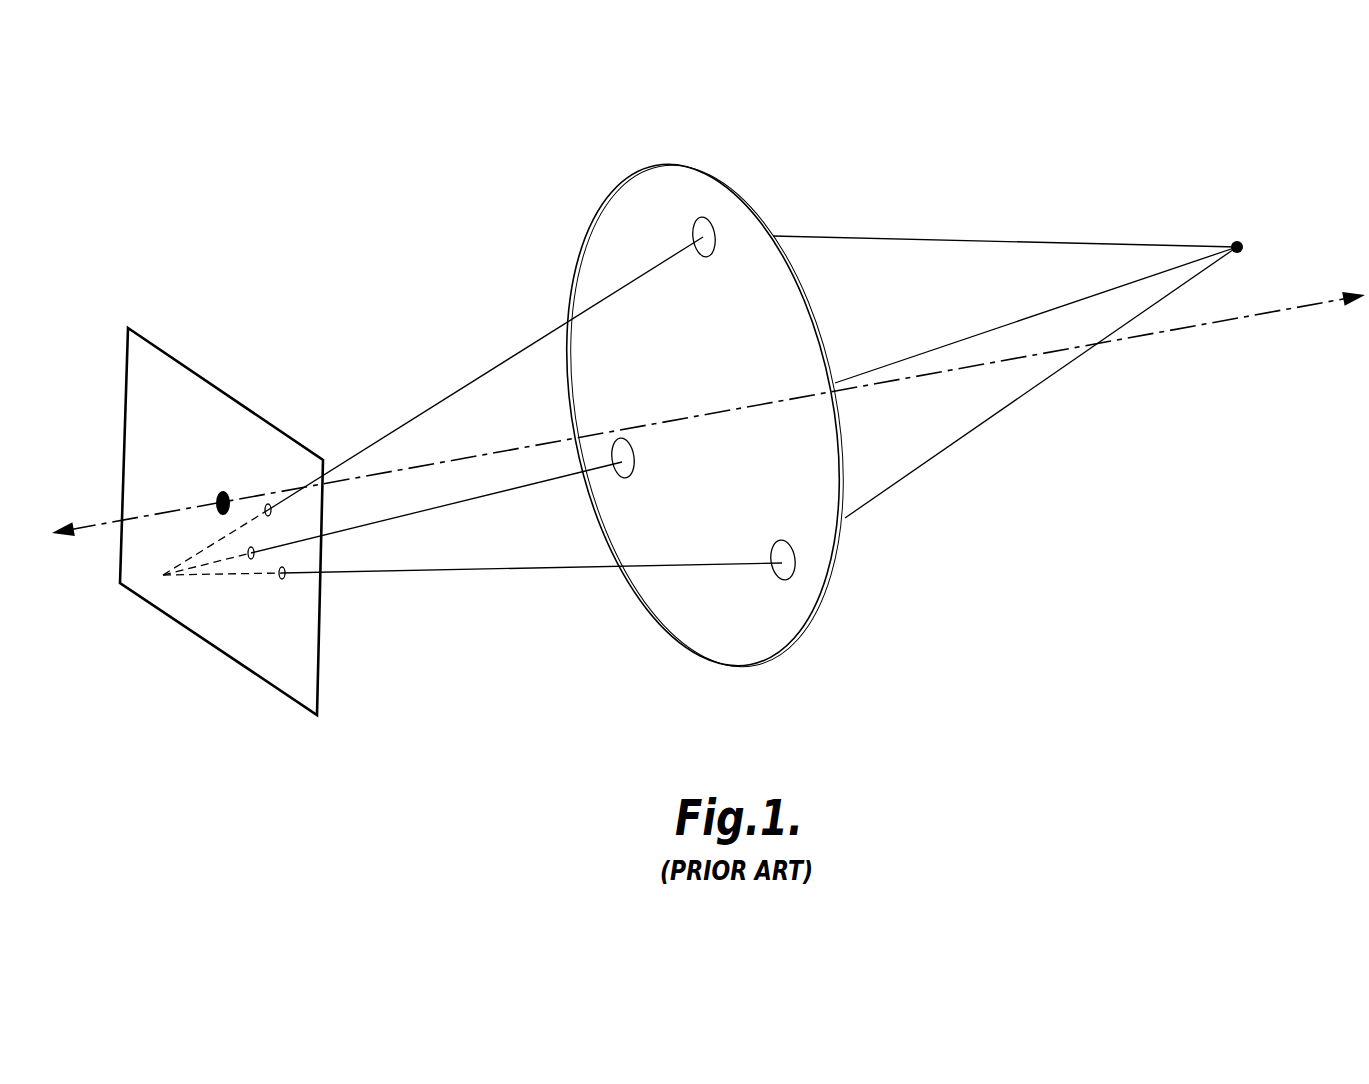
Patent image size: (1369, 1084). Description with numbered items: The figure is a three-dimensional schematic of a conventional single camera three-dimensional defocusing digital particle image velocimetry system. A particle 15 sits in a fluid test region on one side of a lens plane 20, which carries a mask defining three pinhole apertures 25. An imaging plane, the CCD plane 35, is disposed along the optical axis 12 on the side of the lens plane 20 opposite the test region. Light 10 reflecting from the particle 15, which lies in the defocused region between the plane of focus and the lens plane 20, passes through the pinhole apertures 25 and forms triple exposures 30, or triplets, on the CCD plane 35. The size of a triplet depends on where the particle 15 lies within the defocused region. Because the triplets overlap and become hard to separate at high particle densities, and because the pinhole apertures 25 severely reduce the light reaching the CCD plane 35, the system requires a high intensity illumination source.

The light 10 is at (932, 238).
The optical axis 12 is at (1285, 312).
The particle 15 is at (1244, 242).
The lens plane 20 is at (638, 582).
The pinhole apertures 25 is at (697, 222).
The triple exposures 30 is at (283, 580).
The CCD plane 35 is at (133, 378).